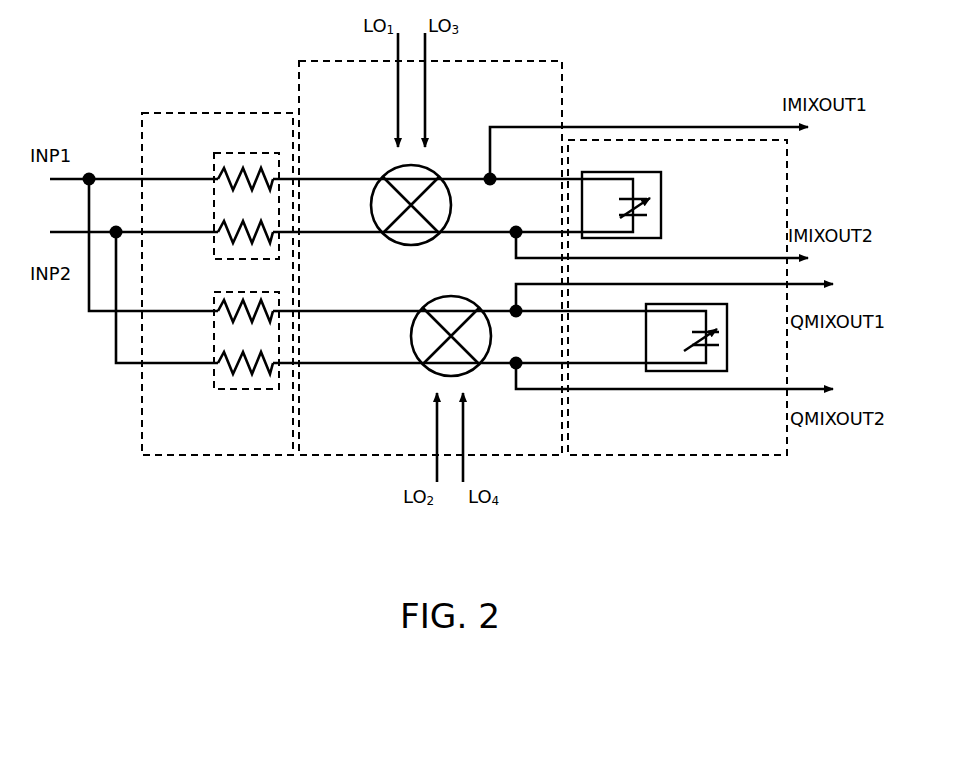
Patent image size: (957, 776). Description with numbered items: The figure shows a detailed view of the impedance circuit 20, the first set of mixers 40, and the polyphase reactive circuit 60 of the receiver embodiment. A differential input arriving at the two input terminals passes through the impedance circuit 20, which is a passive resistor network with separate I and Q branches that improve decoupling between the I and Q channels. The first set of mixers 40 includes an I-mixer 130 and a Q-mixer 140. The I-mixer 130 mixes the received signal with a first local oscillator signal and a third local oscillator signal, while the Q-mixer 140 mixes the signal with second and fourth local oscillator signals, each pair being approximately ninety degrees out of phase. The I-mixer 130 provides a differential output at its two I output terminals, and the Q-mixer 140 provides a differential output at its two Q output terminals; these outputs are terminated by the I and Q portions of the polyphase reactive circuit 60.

The impedance circuit 20 is at (217, 284).
The first set of mixers 40 is at (430, 258).
The I-mixer 130 is at (404, 218).
The Q-mixer 140 is at (453, 326).
The polyphase reactive circuit 60 is at (677, 297).